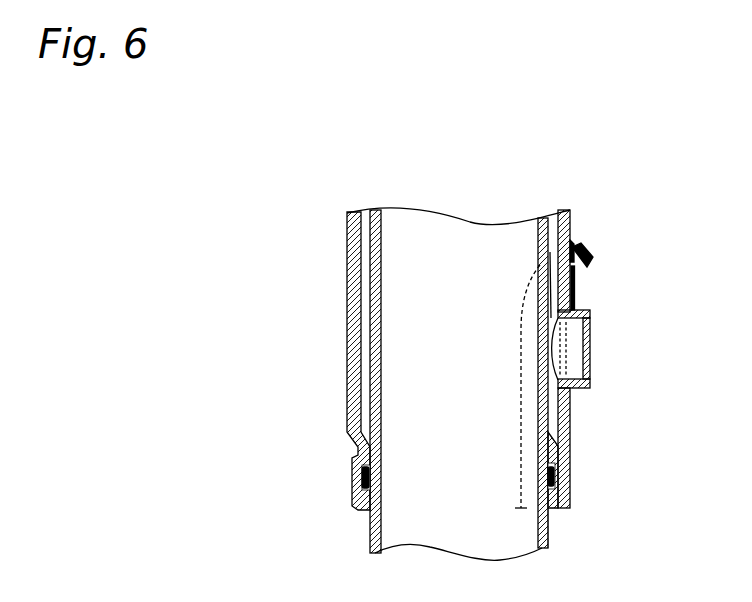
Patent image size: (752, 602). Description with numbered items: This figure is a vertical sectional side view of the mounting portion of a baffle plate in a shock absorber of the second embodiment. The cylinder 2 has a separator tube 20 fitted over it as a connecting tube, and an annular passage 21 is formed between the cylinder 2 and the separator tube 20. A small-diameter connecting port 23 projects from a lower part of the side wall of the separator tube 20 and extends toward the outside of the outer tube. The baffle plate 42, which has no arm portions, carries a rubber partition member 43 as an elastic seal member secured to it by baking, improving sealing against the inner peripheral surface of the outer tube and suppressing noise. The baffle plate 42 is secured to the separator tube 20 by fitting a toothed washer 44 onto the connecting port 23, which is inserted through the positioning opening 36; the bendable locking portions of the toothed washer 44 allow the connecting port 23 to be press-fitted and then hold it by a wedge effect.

The cylinder 2 is at (548, 528).
The separator tube 20 is at (562, 212).
The annular passage 21 is at (545, 218).
The connecting port 23 is at (576, 313).
The positioning opening 36 is at (590, 380).
The baffle plate 42 is at (571, 242).
The partition member 43 is at (589, 258).
The toothed washer 44 is at (577, 293).